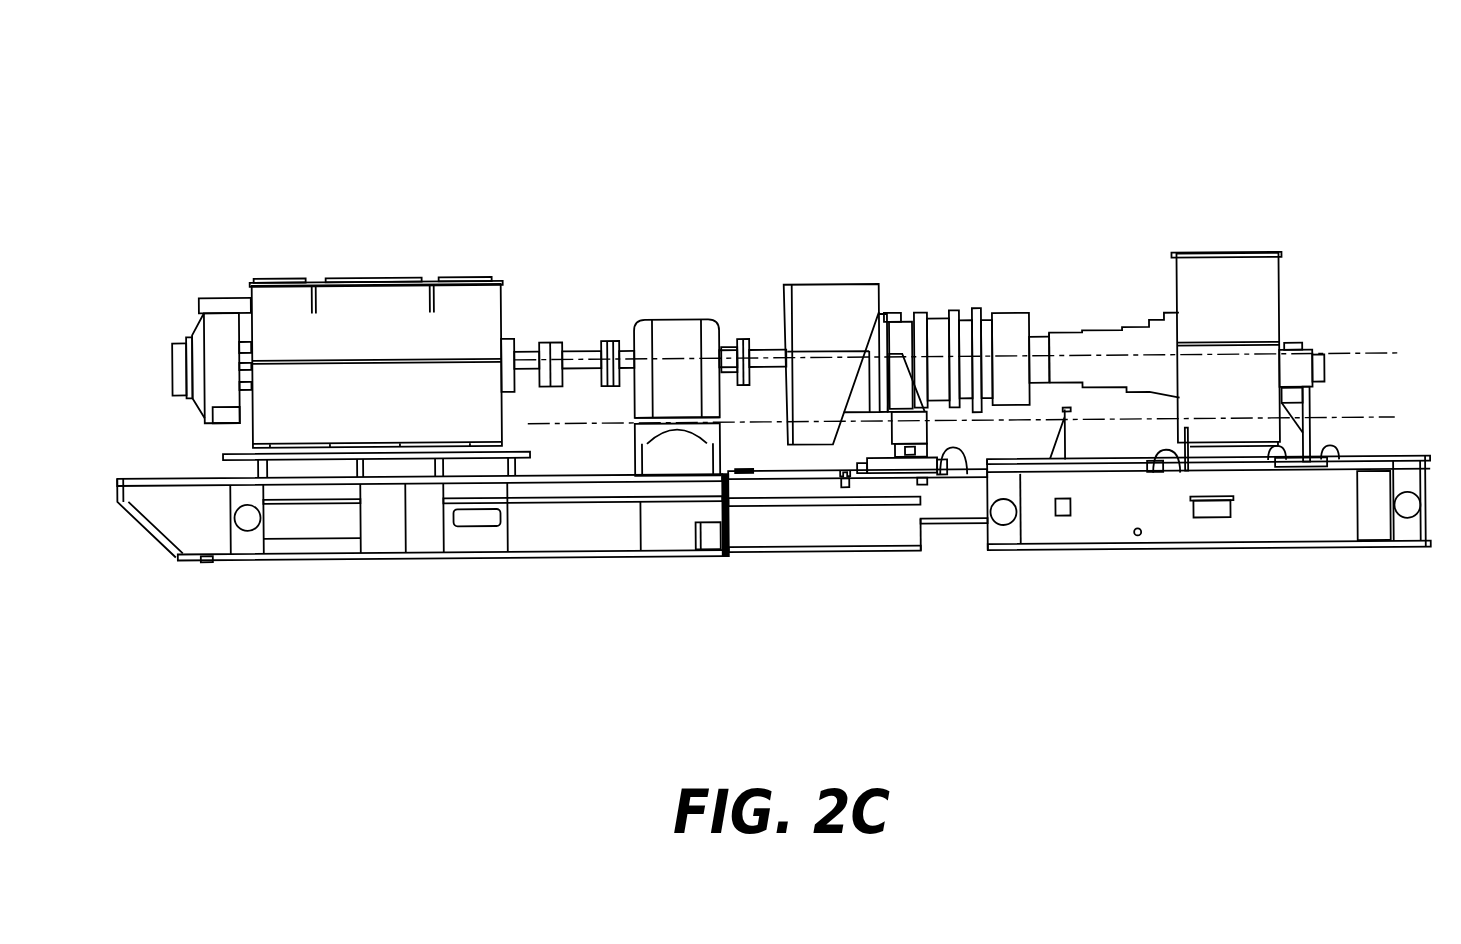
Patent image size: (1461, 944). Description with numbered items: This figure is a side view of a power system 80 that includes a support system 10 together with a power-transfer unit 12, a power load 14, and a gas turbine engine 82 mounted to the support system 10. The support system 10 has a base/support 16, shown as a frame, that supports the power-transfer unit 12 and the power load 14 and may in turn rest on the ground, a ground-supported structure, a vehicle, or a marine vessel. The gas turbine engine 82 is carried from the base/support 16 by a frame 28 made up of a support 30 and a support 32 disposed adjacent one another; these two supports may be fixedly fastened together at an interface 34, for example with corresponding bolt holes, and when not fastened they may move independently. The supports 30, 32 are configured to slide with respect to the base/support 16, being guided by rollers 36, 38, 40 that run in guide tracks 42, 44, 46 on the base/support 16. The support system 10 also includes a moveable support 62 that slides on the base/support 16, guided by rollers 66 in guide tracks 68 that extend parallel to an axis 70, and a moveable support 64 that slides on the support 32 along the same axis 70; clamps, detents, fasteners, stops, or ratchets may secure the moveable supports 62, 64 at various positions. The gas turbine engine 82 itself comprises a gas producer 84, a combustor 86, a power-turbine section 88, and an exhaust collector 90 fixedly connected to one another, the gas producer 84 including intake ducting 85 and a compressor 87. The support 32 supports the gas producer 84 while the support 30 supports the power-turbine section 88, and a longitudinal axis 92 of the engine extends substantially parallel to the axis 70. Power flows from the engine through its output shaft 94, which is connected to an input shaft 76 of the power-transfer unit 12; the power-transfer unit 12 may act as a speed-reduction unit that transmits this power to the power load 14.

The support system 10 is at (552, 591).
The power-transfer unit 12 is at (673, 327).
The power load 14 is at (372, 300).
The base/support 16 is at (598, 530).
The frame 28 is at (1091, 338).
The support 30 is at (887, 463).
The support 32 is at (1060, 466).
The interface 34 is at (957, 462).
The roller 36 is at (862, 479).
The roller 38 is at (933, 474).
The roller 40 is at (1170, 456).
The guide track 42 is at (863, 474).
The guide track 44 is at (940, 477).
The guide track 46 is at (1152, 466).
The moveable support 62 is at (1321, 488).
The moveable support 64 is at (1070, 440).
The rollers 66 is at (1277, 464).
The guide tracks 68 is at (1363, 461).
The axis 70 is at (1380, 418).
The input shaft 76 is at (725, 337).
The power system 80 is at (659, 175).
The gas turbine engine 82 is at (1071, 238).
The gas producer 84 is at (1137, 320).
The intake ducting 85 is at (1268, 290).
The combustor 86 is at (1020, 323).
The compressor 87 is at (1130, 333).
The power-turbine section 88 is at (903, 323).
The exhaust collector 90 is at (857, 293).
The longitudinal axis 92 is at (1345, 348).
The output shaft 94 is at (767, 337).